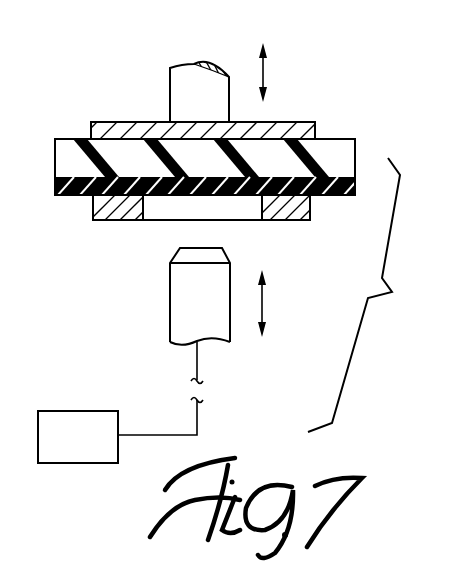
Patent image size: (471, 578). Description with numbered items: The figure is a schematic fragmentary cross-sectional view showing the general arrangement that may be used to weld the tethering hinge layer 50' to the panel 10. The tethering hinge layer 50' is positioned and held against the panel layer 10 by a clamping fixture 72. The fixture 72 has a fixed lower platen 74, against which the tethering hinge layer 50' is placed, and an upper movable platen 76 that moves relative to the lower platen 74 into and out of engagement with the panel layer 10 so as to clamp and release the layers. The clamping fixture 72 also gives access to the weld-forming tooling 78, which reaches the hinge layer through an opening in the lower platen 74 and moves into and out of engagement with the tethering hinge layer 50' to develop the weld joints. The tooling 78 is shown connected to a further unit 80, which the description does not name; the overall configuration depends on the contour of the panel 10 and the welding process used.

The panel 10 is at (352, 131).
The tethering hinge layer 50' is at (354, 295).
The clamping fixture 72 is at (119, 110).
The lower platen 74 is at (112, 220).
The upper movable platen 76 is at (294, 122).
The weld-forming tooling 78 is at (182, 318).
The controller 80 is at (80, 450).